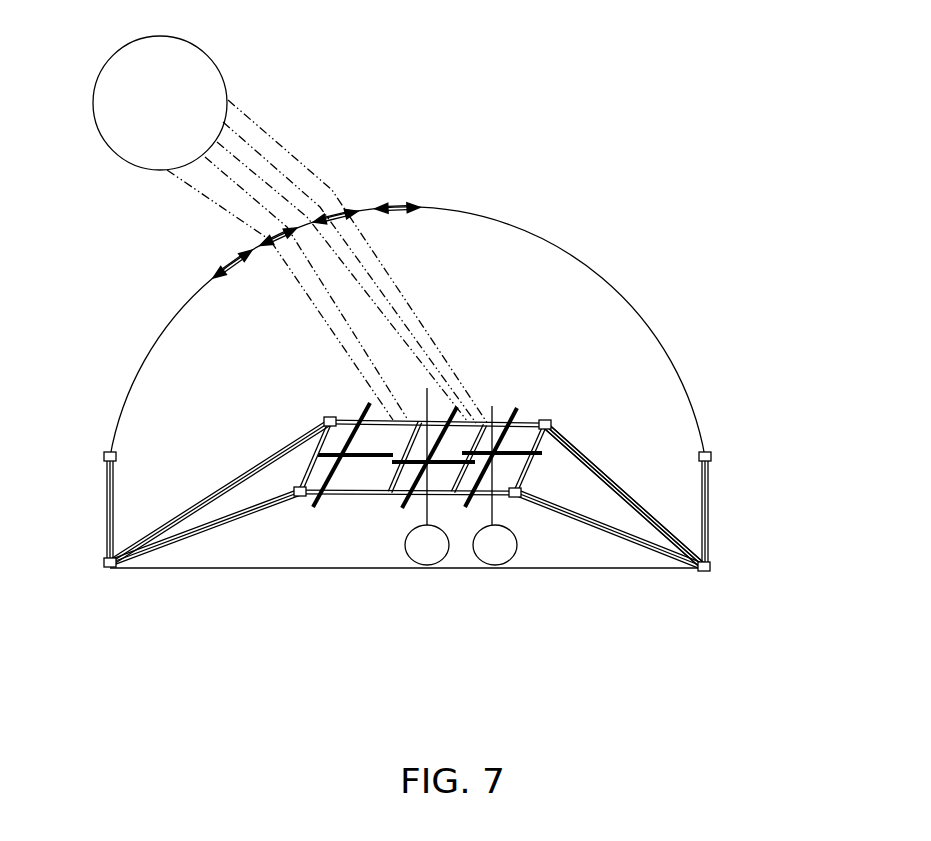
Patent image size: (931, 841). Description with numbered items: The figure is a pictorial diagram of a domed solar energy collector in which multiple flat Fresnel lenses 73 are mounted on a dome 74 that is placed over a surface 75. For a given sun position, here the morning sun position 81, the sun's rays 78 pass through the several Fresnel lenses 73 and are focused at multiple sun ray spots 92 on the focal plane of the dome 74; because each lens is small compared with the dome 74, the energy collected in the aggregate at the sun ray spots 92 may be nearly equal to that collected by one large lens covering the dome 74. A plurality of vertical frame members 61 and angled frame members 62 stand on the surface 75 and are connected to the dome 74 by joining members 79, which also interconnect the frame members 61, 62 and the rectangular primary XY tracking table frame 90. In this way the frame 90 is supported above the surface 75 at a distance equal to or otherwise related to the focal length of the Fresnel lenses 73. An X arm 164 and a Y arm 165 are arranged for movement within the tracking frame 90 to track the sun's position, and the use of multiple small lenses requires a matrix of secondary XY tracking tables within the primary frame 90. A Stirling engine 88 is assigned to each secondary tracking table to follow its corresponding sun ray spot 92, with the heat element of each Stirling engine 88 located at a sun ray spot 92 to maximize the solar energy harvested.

The morning sun position 81 is at (218, 62).
The sun rays 78 is at (212, 203).
The dome 74 is at (523, 227).
The Fresnel lens 73 is at (333, 207).
The surface 75 is at (247, 568).
The vertical frame members 61 is at (102, 507).
The angled frame members 62 is at (240, 473).
The X arm 164 is at (567, 447).
The primary XY tracking table frame 90 is at (343, 494).
The Y arm 165 is at (518, 413).
The sun ray spots 92 is at (430, 388).
The Stirling engine 88 is at (423, 555).
The joining members 79 is at (108, 455).